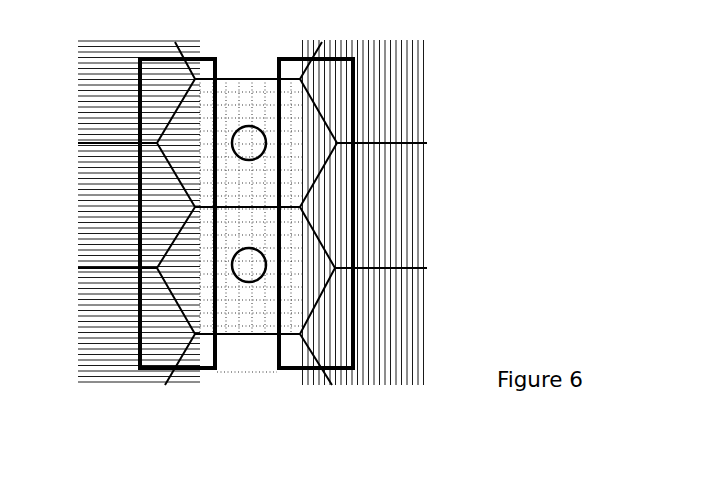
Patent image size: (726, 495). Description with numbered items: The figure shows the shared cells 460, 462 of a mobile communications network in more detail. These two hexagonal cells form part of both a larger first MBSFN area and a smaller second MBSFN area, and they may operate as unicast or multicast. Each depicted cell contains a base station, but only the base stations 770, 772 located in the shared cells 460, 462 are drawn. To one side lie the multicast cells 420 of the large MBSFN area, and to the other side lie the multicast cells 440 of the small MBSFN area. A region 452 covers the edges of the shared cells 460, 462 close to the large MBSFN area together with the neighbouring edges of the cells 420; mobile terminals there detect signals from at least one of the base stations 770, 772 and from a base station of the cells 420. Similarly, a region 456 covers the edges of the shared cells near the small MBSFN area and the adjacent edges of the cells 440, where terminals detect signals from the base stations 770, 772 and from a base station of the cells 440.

The cells 420 is at (139, 211).
The cells 440 is at (363, 212).
The region 452 is at (192, 368).
The region 456 is at (308, 363).
The cell 460 is at (247, 124).
The cell 462 is at (246, 296).
The base station 770 is at (266, 143).
The base station 772 is at (266, 265).